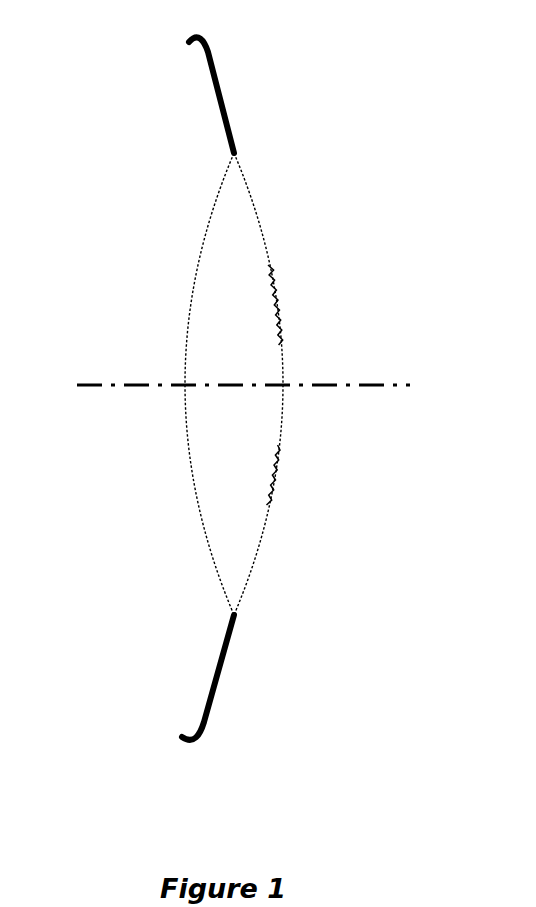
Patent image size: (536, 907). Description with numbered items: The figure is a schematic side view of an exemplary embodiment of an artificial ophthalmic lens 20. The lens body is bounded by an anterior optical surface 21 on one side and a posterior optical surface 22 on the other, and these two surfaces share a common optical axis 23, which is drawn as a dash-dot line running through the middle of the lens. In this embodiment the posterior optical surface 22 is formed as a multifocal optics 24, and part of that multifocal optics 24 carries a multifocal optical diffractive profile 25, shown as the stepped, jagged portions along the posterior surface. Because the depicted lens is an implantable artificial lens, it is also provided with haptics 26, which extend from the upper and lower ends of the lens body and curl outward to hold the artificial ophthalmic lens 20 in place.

The artificial ophthalmic lens 20 is at (231, 377).
The anterior optical surface 21 is at (225, 168).
The posterior optical surface 22 is at (241, 168).
The optical axis 23 is at (164, 376).
The multifocal optics 24 is at (295, 276).
The multifocal optical diffractive profile 25 is at (275, 456).
The haptics 26 is at (212, 76).